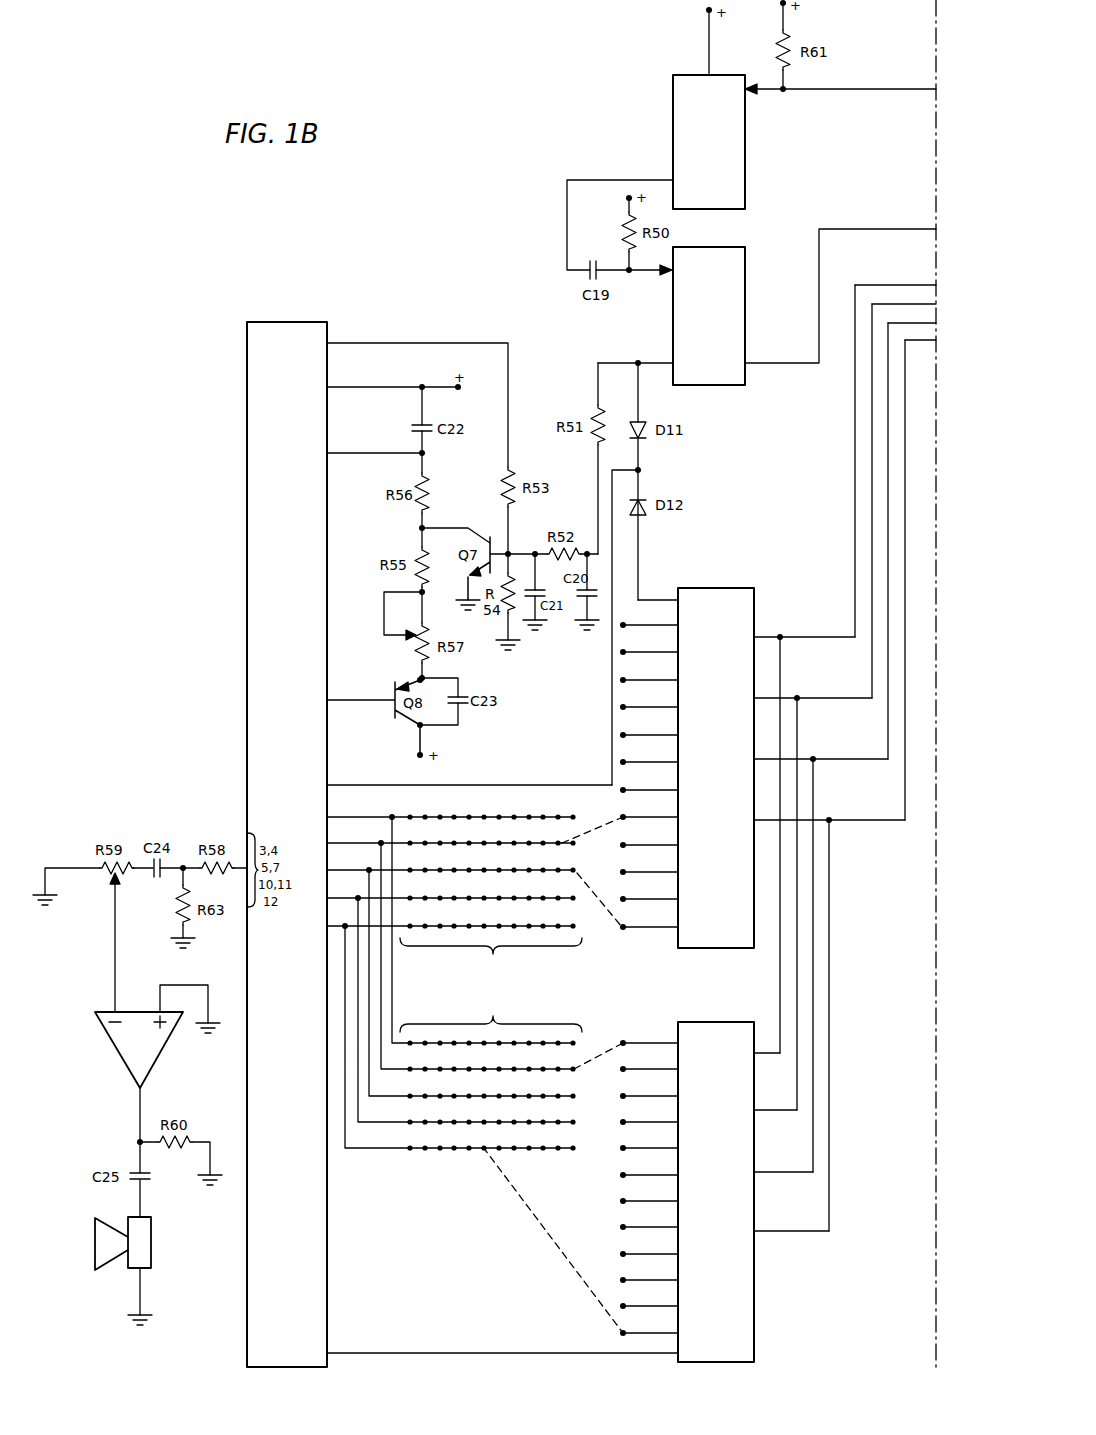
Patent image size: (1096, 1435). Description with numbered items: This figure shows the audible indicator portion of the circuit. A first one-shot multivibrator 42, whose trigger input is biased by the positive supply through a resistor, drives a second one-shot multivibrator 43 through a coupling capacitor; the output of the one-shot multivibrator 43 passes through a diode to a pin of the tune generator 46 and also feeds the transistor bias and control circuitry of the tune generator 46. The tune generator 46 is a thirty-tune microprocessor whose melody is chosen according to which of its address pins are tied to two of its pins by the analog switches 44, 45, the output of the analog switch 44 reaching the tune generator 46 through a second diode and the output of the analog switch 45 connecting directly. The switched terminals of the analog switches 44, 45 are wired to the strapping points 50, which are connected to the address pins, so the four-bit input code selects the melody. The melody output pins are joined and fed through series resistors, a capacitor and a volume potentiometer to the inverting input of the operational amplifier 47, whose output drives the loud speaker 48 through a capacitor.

The one-shot multivibrator 42 is at (745, 158).
The one-shot multivibrator 43 is at (745, 296).
The analog switch 44 is at (733, 588).
The analog switch 45 is at (720, 1022).
The tune generator 46 is at (247, 473).
The operational amplifier 47 is at (157, 1053).
The loud speaker 48 is at (152, 1247).
The strapping points 50 is at (504, 998).